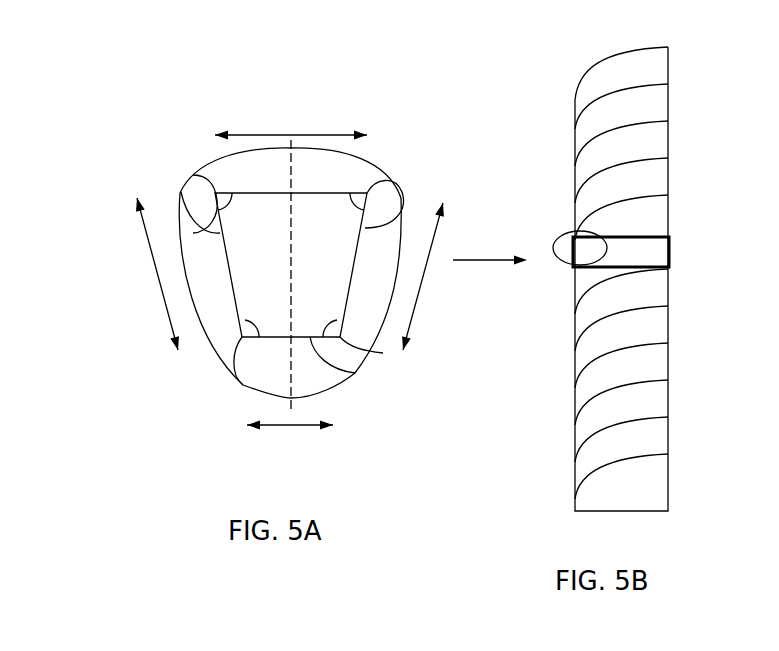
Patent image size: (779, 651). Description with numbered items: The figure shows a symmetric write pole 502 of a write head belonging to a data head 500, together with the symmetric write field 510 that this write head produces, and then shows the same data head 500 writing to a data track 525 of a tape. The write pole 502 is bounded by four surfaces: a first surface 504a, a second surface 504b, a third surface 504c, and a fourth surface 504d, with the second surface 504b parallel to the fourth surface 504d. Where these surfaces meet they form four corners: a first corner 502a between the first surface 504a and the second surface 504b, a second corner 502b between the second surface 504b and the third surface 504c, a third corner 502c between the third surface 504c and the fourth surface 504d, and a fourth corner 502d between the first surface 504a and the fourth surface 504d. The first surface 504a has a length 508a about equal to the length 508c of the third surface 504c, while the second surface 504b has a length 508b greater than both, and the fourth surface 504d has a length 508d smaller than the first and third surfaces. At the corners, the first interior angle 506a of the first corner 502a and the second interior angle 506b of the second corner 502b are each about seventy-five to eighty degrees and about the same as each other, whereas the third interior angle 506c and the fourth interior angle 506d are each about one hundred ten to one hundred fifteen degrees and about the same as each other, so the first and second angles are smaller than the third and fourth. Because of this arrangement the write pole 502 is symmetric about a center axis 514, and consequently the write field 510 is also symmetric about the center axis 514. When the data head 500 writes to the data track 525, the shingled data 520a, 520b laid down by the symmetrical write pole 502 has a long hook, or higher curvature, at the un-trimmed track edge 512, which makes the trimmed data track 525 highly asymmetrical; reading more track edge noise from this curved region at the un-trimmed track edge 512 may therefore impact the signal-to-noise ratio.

In FIG. 5A, the data head 500 is at (213, 97).
In FIG. 5B, the data head 500 is at (599, 279).
In FIG. 5A, the write pole 502 is at (336, 271).
In FIG. 5A, the first corner 502a is at (193, 175).
In FIG. 5A, the second corner 502b is at (390, 182).
In FIG. 5A, the third corner 502c is at (383, 353).
In FIG. 5A, the fourth corner 502d is at (238, 387).
In FIG. 5A, the first surface 504a is at (182, 192).
In FIG. 5A, the second surface 504b is at (322, 193).
In FIG. 5A, the third surface 504c is at (400, 200).
In FIG. 5A, the fourth surface 504d is at (355, 373).
In FIG. 5A, the first interior angle 506a is at (232, 193).
In FIG. 5A, the second interior angle 506b is at (350, 197).
In FIG. 5A, the third interior angle 506c is at (325, 318).
In FIG. 5A, the fourth interior angle 506d is at (247, 320).
In FIG. 5A, the length of the first surface 508a is at (161, 290).
In FIG. 5A, the length of the second surface 508b is at (310, 133).
In FIG. 5A, the length of the third surface 508c is at (420, 290).
In FIG. 5A, the length of the fourth surface 508d is at (293, 427).
In FIG. 5A, the write field 510 is at (210, 347).
In FIG. 5B, the un-trimmed track edge 512 is at (562, 222).
In FIG. 5A, the center axis 514 is at (288, 183).
In FIG. 5B, the shingled data 520a is at (621, 252).
In FIG. 5B, the shingled data 520b is at (594, 224).
In FIG. 5B, the data track 525 is at (548, 112).